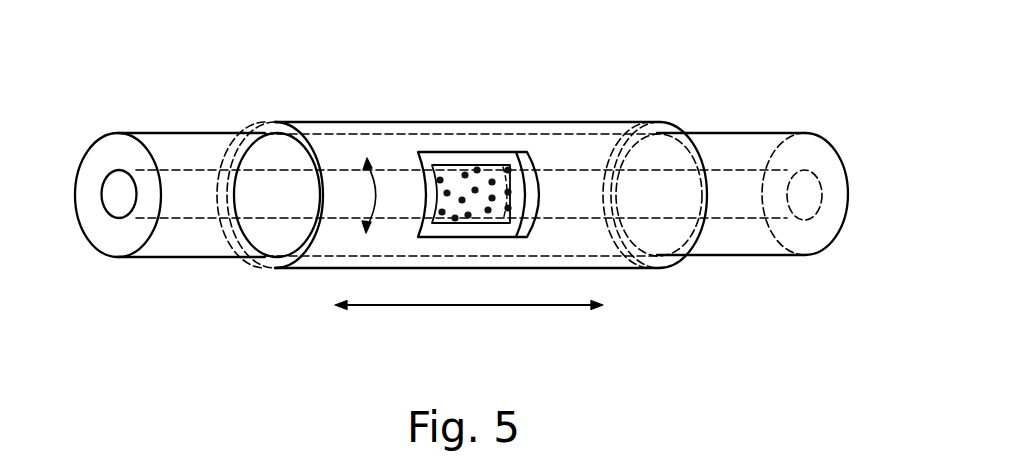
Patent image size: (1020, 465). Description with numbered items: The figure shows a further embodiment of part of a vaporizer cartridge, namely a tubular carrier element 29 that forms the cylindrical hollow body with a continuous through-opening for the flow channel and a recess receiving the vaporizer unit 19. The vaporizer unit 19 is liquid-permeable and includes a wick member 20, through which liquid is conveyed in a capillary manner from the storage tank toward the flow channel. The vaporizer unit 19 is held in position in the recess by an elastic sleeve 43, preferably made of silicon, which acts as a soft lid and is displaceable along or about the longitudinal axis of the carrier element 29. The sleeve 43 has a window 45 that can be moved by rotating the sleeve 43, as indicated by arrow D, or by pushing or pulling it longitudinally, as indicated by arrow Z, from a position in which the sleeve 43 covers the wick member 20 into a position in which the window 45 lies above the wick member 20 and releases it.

The vaporizer unit 19 is at (777, 100).
The wick member 20 is at (450, 162).
The carrier element 29 is at (738, 163).
The sleeve 43 is at (617, 130).
The window 45 is at (507, 167).
The arrow D is at (367, 198).
The arrow Z is at (468, 307).